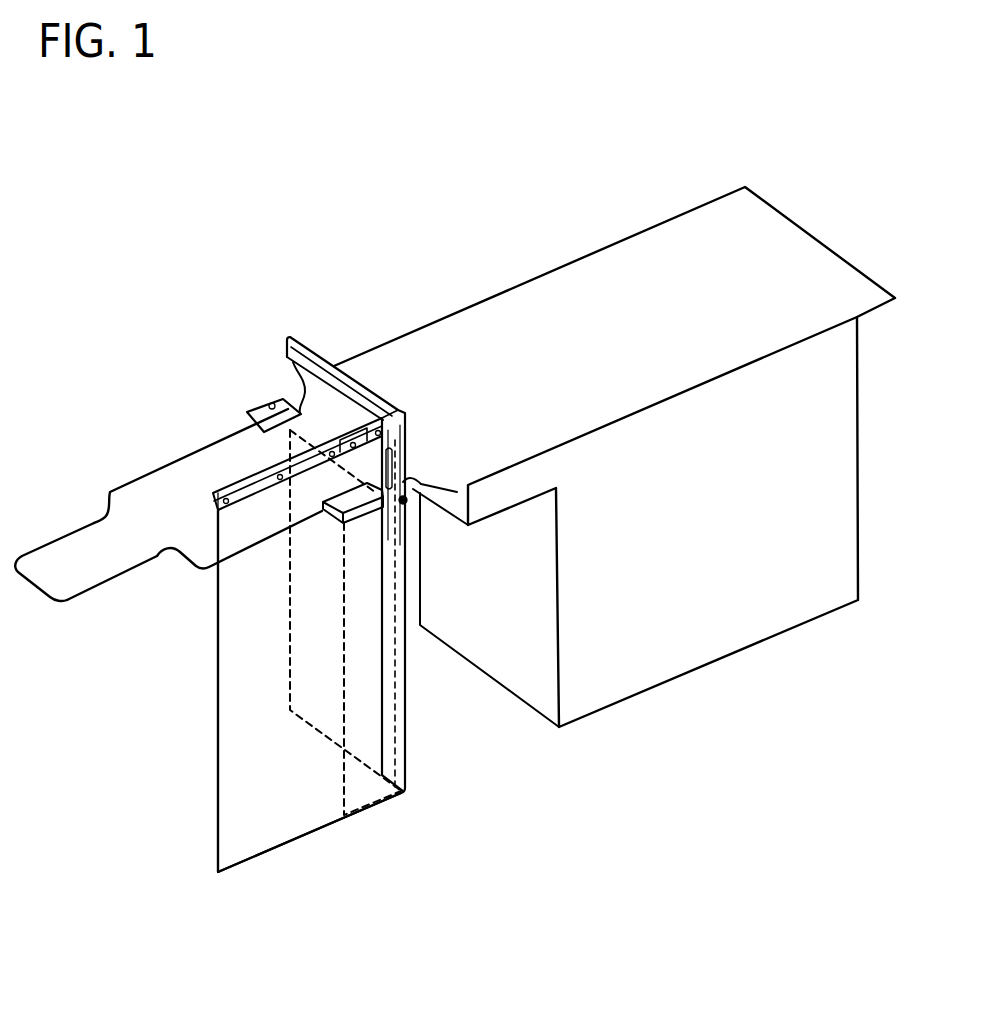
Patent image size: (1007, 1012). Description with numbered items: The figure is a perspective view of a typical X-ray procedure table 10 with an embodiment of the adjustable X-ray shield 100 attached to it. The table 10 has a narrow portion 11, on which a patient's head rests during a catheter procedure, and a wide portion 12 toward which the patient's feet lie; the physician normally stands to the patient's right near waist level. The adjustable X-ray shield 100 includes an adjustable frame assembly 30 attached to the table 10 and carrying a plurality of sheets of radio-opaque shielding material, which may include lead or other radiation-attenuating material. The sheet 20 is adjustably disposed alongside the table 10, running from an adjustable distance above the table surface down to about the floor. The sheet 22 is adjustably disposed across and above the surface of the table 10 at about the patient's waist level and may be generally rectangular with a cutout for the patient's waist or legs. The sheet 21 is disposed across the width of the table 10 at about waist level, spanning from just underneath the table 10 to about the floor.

The adjustable X-ray shield 100 is at (152, 727).
The X-ray procedure table 10 is at (168, 497).
The narrow portion 11 is at (87, 540).
The wide portion 12 is at (632, 273).
The sheet of radio-opaque shielding material 20 is at (298, 805).
The sheet of radio-opaque shielding material 21 is at (303, 690).
The sheet of radio-opaque shielding material 22 is at (303, 378).
The adjustable frame assembly 30 is at (258, 475).